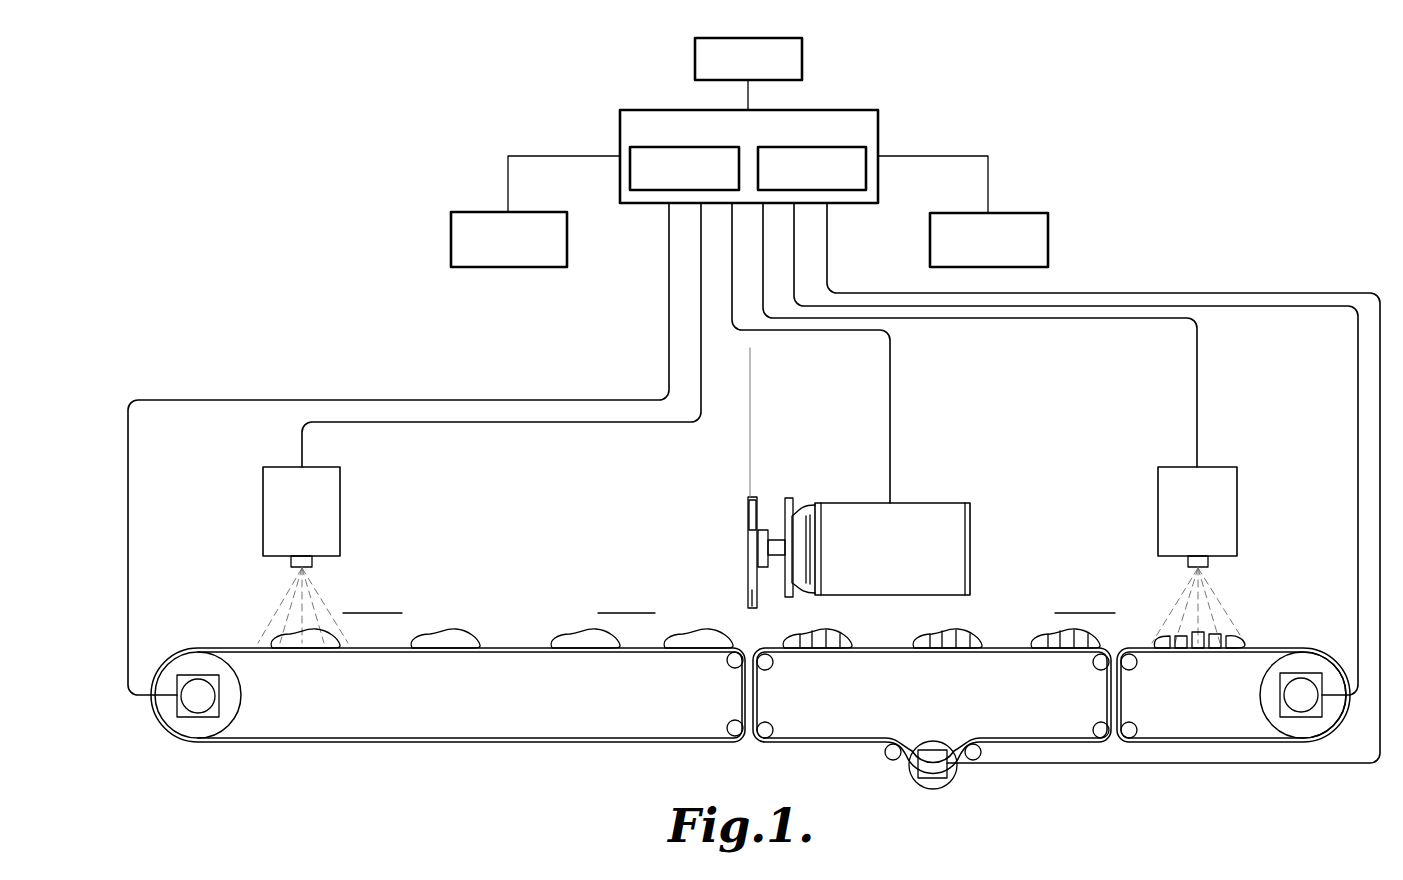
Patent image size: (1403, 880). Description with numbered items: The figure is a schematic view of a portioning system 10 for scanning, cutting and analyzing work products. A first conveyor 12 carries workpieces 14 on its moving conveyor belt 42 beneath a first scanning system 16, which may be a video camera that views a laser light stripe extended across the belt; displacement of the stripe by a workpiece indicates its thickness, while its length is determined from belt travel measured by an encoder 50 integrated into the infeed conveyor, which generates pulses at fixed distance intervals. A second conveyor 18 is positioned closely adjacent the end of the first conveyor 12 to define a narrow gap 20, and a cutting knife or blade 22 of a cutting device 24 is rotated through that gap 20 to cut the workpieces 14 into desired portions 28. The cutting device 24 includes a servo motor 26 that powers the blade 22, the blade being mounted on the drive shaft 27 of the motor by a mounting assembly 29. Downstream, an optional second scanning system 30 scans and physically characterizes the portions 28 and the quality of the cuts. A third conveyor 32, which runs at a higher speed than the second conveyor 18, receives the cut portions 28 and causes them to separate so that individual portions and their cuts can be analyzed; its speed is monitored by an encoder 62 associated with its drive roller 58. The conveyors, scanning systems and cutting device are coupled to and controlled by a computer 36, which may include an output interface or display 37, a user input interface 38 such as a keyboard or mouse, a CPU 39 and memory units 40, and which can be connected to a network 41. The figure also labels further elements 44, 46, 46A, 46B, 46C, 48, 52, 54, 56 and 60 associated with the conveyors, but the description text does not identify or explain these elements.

The portioning system 10 is at (236, 134).
The first conveyor 12 is at (439, 705).
The workpieces 14 is at (458, 632).
The first scanning system 16 is at (340, 505).
The second conveyor 18 is at (932, 736).
The gap 20 is at (753, 648).
The cutting knife or blade 22 is at (752, 388).
The cutting device 24 is at (822, 496).
The servo motor 26 is at (930, 503).
The drive shaft 27 is at (769, 540).
The portions 28 is at (846, 630).
The mounting assembly 29 is at (815, 498).
The second scanning system 30 is at (1237, 503).
The third conveyor 32 is at (1246, 713).
The computer 36 is at (890, 116).
The output interface or display 37 is at (1048, 238).
The user input interface 38 is at (451, 238).
The CPU 39 is at (630, 168).
The memory units 40 is at (866, 170).
The network 41 is at (802, 57).
The conveyor belt 42 is at (225, 648).
The drive roller 44 is at (185, 728).
The idler rollers 46 is at (727, 660).
The idler rollers 46A is at (773, 664).
The idler rollers 46B is at (1093, 664).
The idler rollers 46C is at (1137, 664).
The belt end 48 is at (742, 695).
The encoder 50 is at (185, 678).
The cut fish portions 52 is at (990, 642).
The drive roller 54 is at (920, 785).
The conveyor motor 56 is at (945, 772).
The drive roller 58 is at (1308, 664).
The conveyor belt 60 is at (1175, 742).
The encoder 62 is at (1315, 717).